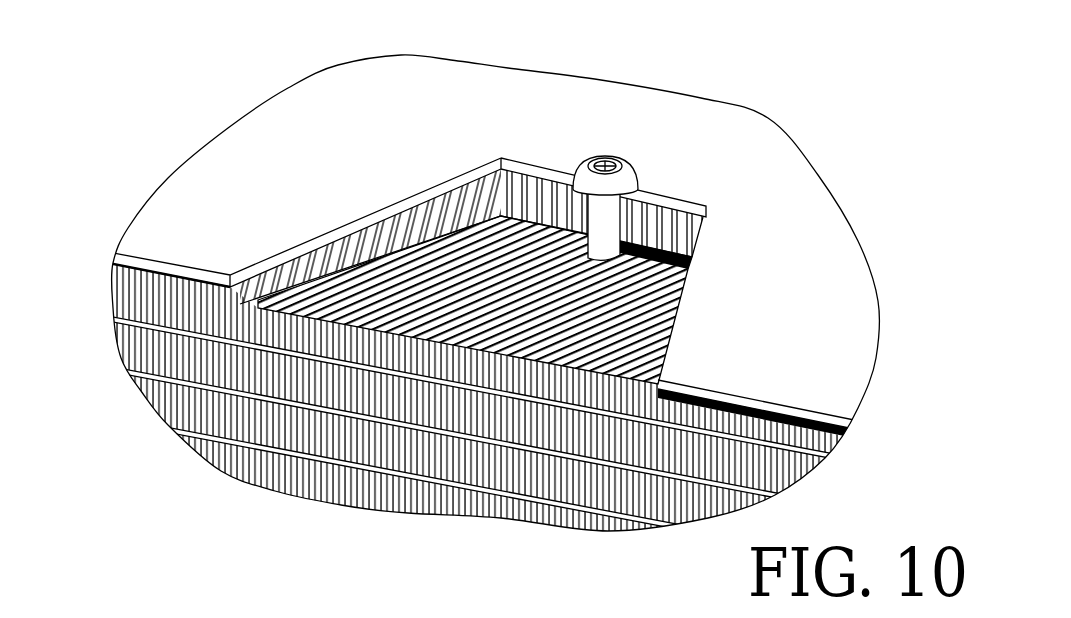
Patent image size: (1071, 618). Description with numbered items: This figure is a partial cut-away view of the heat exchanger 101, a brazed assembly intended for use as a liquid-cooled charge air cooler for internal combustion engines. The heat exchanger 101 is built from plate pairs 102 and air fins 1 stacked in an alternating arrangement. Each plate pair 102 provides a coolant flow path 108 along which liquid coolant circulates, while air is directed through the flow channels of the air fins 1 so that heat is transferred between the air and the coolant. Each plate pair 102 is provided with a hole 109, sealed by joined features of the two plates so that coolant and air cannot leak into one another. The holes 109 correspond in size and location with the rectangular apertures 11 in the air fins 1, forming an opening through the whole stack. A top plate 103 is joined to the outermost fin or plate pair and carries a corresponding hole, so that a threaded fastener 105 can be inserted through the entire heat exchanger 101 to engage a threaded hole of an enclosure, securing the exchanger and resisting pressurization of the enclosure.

The heat exchanger 101 is at (203, 103).
The plate pair 102 is at (112, 260).
The top plate 103 is at (818, 227).
The air fin 1 is at (122, 287).
The coolant flow path 108 is at (357, 268).
The rectangular aperture 11 is at (573, 240).
The threaded fastener 105 is at (618, 162).
The hole 109 is at (620, 232).